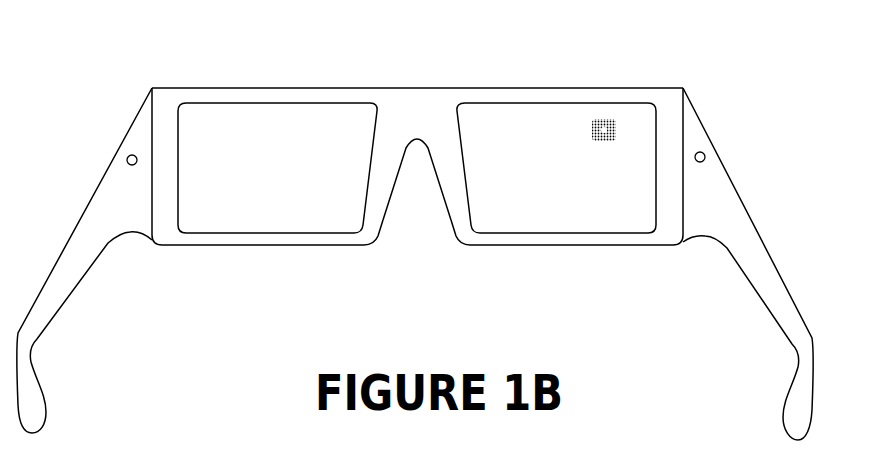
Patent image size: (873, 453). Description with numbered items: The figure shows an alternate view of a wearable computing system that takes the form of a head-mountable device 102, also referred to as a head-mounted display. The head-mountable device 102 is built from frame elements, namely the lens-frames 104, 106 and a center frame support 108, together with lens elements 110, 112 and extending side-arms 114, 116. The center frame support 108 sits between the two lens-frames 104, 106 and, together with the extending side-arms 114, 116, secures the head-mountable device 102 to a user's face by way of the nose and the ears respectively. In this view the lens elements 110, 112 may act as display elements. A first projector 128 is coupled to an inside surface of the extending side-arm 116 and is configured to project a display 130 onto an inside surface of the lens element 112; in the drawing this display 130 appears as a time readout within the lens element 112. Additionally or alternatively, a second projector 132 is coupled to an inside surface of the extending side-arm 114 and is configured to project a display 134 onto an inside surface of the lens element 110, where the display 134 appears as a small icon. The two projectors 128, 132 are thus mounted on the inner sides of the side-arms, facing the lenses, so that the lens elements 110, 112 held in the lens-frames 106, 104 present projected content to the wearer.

The head-mountable device 102 is at (198, 70).
The lens-frame 104 is at (648, 247).
The lens-frame 106 is at (203, 247).
The center frame support 108 is at (413, 88).
The lens element 110 is at (523, 225).
The lens element 112 is at (293, 224).
The extending side-arm 114 is at (741, 193).
The extending side-arm 116 is at (74, 229).
The first projector 128 is at (127, 157).
The display 130 is at (272, 133).
The second projector 132 is at (706, 153).
The display 134 is at (596, 137).